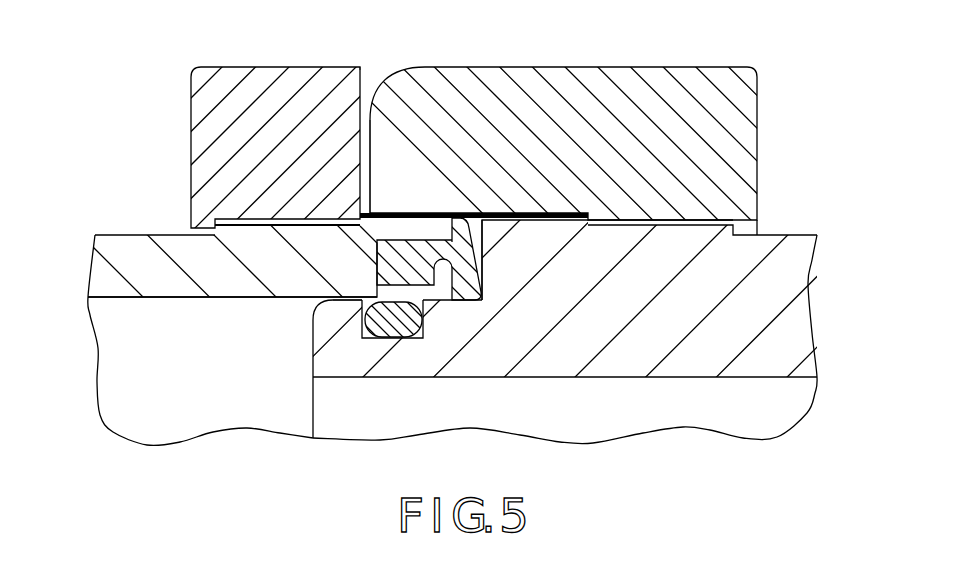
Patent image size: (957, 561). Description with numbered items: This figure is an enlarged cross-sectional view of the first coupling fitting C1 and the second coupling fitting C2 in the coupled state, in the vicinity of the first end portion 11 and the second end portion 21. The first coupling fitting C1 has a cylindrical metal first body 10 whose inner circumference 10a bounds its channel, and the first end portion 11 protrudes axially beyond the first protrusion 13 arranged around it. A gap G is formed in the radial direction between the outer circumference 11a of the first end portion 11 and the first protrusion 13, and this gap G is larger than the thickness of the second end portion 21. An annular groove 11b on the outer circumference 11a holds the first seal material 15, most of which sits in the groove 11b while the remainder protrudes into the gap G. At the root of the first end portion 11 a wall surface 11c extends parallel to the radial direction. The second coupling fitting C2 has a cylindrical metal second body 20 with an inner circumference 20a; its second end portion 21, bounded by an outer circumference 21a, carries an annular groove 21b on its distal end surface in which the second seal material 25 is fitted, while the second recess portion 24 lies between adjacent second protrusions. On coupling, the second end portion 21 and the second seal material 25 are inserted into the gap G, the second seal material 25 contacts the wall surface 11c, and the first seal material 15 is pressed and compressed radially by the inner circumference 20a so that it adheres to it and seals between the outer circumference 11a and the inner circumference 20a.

The first body 10 is at (584, 315).
The inner circumference of the first body 10a is at (610, 378).
The first end portion 11 is at (305, 358).
The outer circumference of the first end portion 11a is at (445, 300).
The groove 11b is at (370, 338).
The wall surface 11c is at (483, 257).
The first protrusion 13 is at (550, 73).
The first seal material 15 is at (407, 335).
The second body 20 is at (239, 317).
The inner circumference of the second body 20a is at (147, 298).
The second end portion 21 is at (444, 224).
The outer circumference of the second end portion 21a is at (427, 213).
The groove 21b is at (377, 273).
The second recess portion 24 is at (373, 80).
The second seal material 25 is at (480, 276).
The first coupling fitting C1 is at (615, 128).
The second coupling fitting C2 is at (152, 168).
The gap G is at (357, 286).